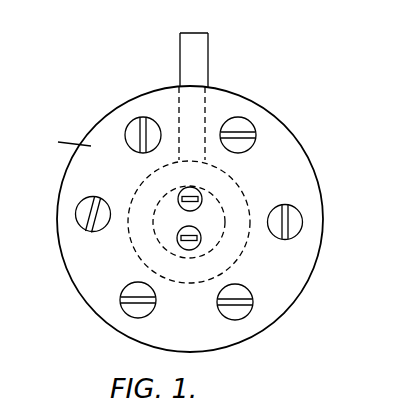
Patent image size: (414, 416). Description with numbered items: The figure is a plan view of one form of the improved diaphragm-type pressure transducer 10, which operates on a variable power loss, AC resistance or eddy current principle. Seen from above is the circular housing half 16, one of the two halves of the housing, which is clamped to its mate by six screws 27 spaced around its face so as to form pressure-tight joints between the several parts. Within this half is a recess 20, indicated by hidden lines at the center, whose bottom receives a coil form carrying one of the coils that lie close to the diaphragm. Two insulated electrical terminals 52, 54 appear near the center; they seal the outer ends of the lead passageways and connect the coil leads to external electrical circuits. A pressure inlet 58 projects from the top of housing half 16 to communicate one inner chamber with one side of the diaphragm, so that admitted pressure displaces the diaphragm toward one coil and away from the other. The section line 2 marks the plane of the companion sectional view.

The section line 2- 2 is at (193, 77).
The diaphragm-type pressure transducer 10 is at (303, 131).
The housing half 16 is at (62, 144).
The recess 20 is at (243, 189).
The screws 27 is at (293, 219).
The insulated electrical terminal 52 is at (190, 188).
The insulated electrical terminal 54 is at (185, 239).
The pressure inlet 58 is at (181, 50).